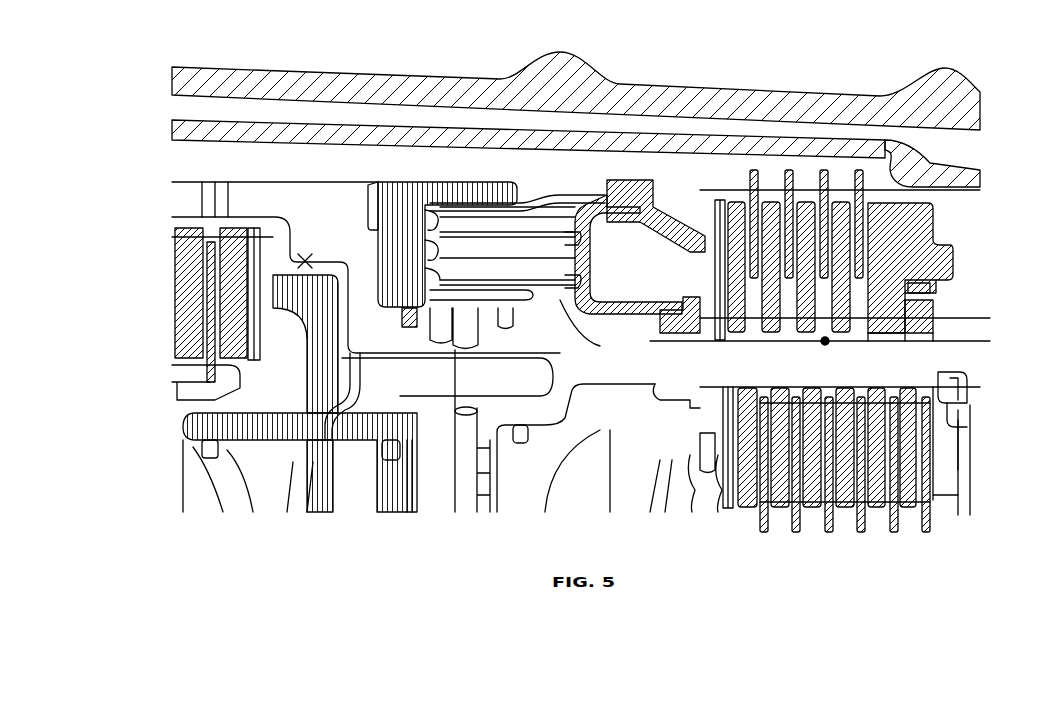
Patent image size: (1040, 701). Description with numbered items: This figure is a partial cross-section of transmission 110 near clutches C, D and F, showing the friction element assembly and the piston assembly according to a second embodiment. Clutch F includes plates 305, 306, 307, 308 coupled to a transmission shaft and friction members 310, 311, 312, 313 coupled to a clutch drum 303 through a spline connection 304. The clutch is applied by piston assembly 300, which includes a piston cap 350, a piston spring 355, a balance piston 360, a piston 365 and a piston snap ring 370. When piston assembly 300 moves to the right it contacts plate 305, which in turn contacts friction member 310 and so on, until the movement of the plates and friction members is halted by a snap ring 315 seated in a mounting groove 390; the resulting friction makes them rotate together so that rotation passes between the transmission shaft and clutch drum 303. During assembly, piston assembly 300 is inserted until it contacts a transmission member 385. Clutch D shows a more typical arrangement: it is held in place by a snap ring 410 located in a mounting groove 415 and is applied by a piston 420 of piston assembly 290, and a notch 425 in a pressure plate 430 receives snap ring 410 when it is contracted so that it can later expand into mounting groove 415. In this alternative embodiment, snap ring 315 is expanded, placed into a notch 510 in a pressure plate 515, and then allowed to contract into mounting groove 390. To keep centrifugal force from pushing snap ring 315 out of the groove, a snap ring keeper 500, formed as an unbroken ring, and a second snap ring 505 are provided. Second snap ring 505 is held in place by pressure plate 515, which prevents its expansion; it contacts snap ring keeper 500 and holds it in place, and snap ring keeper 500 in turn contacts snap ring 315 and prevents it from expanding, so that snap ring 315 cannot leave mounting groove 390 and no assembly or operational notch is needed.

The transmission 110 is at (884, 66).
The piston assembly 300 is at (569, 186).
The clutch drum 303 is at (948, 176).
The spline connection 304 is at (912, 163).
The plate 305 is at (738, 322).
The plate 306 is at (771, 322).
The plate 307 is at (804, 322).
The plate 308 is at (840, 322).
The friction member 310 is at (753, 168).
The friction member 311 is at (790, 168).
The friction member 312 is at (825, 168).
The friction member 313 is at (860, 168).
The snap ring 315 is at (912, 333).
The piston cap 350 is at (395, 212).
The piston spring 355 is at (492, 262).
The balance piston 360 is at (630, 245).
The piston 365 is at (652, 192).
The piston snap ring 370 is at (692, 335).
The transmission member 385 is at (332, 200).
The mounting groove 390 is at (931, 341).
The piston assembly 290 is at (588, 486).
The snap ring 410 is at (958, 393).
The mounting groove 415 is at (938, 378).
The piston 420 is at (705, 470).
The notch 425 is at (958, 425).
The pressure plate 430 is at (935, 495).
The snap ring keeper 500 is at (934, 308).
The second snap ring 505 is at (932, 290).
The notch 510 is at (906, 280).
The pressure plate 515 is at (922, 220).
The clutch C is at (174, 296).
The clutch D is at (843, 538).
The clutch F is at (946, 259).